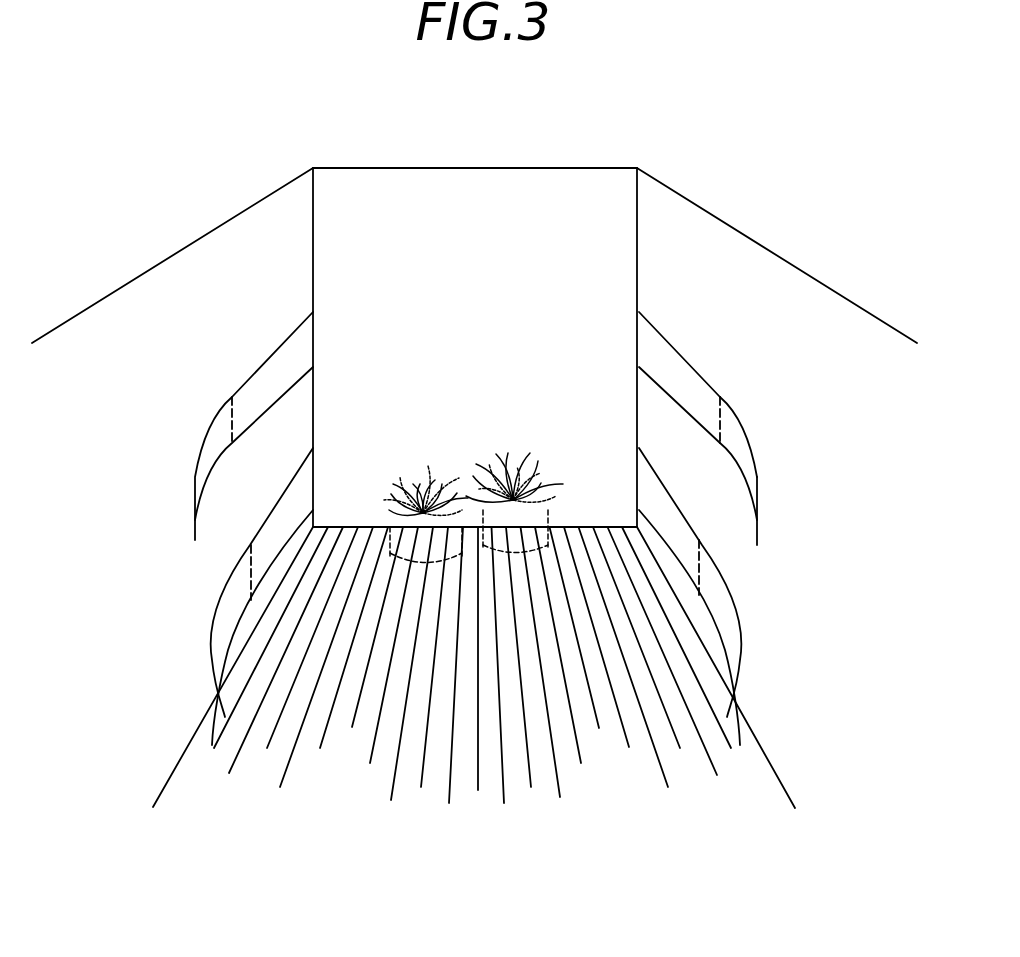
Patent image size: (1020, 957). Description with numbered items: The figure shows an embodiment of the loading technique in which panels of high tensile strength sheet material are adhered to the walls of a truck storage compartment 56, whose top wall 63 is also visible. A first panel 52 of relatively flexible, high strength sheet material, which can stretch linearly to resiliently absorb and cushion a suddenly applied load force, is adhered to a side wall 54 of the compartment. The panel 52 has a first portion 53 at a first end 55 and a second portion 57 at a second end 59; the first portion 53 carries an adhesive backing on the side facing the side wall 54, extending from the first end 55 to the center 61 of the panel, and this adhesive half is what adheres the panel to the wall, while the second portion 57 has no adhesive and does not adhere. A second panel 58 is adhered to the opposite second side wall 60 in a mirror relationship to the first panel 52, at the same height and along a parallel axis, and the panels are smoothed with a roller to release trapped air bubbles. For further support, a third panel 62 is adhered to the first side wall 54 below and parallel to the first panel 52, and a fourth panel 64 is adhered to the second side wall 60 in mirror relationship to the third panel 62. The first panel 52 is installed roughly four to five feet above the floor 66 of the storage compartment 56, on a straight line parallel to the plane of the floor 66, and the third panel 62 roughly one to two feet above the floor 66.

The first panel 52 is at (688, 338).
The first portion 53 is at (675, 380).
The side wall 54 is at (739, 256).
The first end 55 is at (637, 333).
The truck storage compartment 56 is at (418, 218).
The second portion 57 is at (740, 462).
The second panel 58 is at (278, 335).
The second end 59 is at (757, 504).
The second side wall 60 is at (193, 285).
The center 61 is at (713, 417).
The third panel 62 is at (693, 517).
The top wall of housing 63 is at (507, 190).
The fourth panel 64 is at (268, 495).
The floor 66 is at (547, 518).